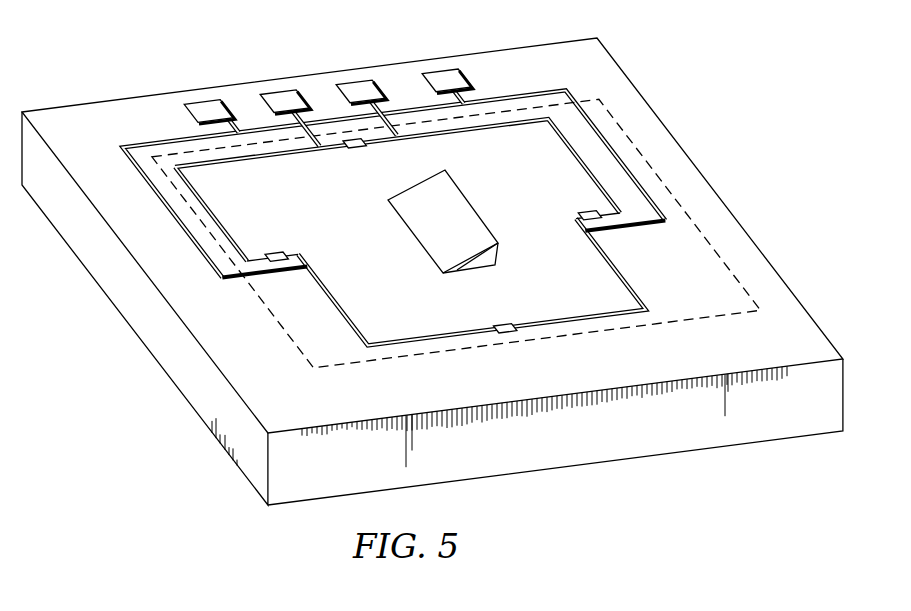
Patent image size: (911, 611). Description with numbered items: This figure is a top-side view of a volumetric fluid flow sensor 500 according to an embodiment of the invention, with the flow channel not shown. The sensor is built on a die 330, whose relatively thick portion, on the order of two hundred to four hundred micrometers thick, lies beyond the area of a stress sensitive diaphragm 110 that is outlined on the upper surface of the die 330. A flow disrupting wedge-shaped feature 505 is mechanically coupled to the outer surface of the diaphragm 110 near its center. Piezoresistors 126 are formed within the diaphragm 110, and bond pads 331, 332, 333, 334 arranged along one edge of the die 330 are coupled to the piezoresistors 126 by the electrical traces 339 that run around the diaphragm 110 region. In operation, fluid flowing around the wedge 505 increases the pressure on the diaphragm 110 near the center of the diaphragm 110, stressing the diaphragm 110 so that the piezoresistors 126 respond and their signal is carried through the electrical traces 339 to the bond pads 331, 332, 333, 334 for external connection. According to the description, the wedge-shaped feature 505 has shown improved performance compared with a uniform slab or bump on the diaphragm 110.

The volumetric fluid flow sensor 500 is at (110, 380).
The die 330 is at (783, 315).
The electrical traces 339 is at (618, 160).
The stress sensitive diaphragm 110 is at (661, 327).
The piezoresistors 126 is at (418, 136).
The bond pad 331 is at (207, 112).
The bond pad 332 is at (298, 100).
The bond pad 333 is at (375, 92).
The bond pad 334 is at (450, 78).
The flow disrupting wedge-shaped feature 505 is at (440, 207).